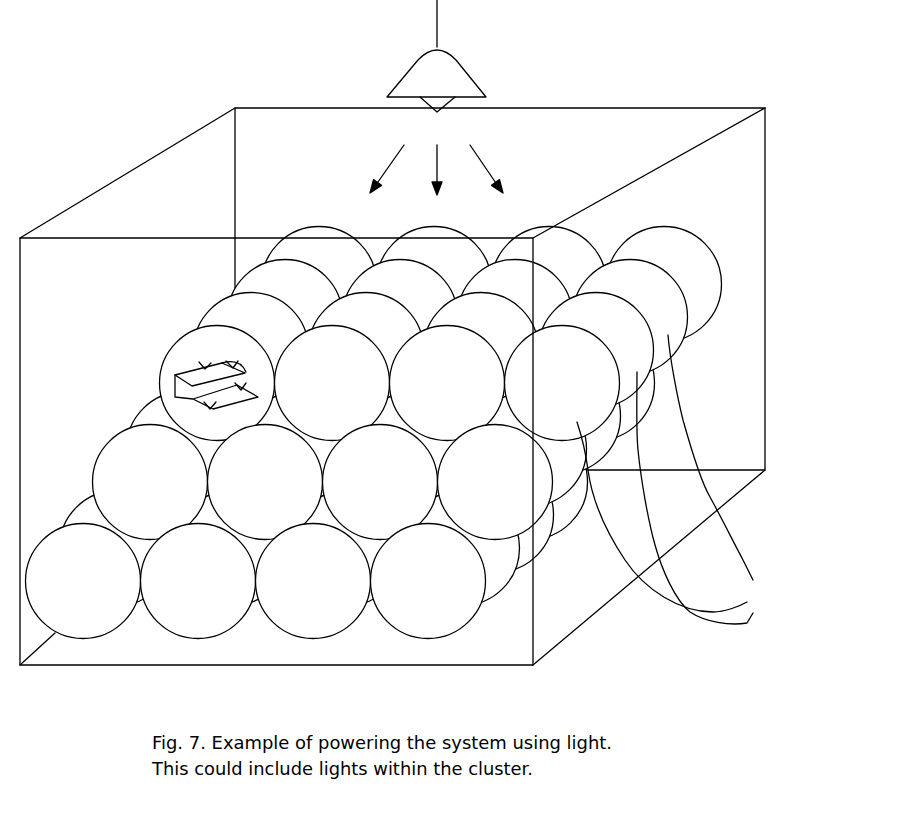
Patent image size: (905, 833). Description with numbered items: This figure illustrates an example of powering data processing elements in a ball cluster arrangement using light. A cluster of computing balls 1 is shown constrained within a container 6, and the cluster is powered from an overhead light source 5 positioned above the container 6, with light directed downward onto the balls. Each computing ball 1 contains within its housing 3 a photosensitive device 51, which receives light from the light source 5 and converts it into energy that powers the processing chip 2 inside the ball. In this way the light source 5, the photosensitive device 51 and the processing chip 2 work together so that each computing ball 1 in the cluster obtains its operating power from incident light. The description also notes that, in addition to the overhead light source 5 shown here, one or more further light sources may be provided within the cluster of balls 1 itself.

The computing ball 1 is at (140, 378).
The processing chip 2 is at (130, 427).
The housing 3 is at (205, 367).
The light source 5 is at (447, 82).
The container 6 is at (743, 207).
The photosensitive device 51 is at (172, 347).